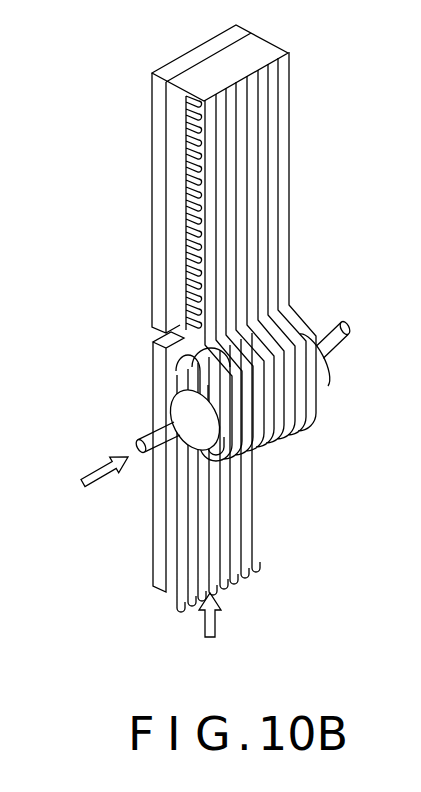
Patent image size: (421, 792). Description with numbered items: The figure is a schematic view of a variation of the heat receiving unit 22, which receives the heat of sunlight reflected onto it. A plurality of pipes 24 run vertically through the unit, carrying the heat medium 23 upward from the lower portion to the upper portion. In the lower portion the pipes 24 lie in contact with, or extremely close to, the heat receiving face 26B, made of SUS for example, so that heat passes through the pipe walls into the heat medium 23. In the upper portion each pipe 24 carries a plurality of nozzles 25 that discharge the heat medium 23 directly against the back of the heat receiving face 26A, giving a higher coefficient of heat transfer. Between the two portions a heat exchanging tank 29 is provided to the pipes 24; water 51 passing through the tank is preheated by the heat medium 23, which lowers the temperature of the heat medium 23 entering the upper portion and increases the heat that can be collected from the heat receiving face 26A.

The heat receiving unit 22 is at (60, 141).
The heat medium 23 is at (216, 624).
The pipes 24 is at (286, 206).
The nozzles 25 is at (186, 181).
The heat receiving face 26A is at (158, 263).
The heat receiving face 26B is at (158, 557).
The heat exchanging tank 29 is at (320, 372).
The water 51 is at (98, 465).